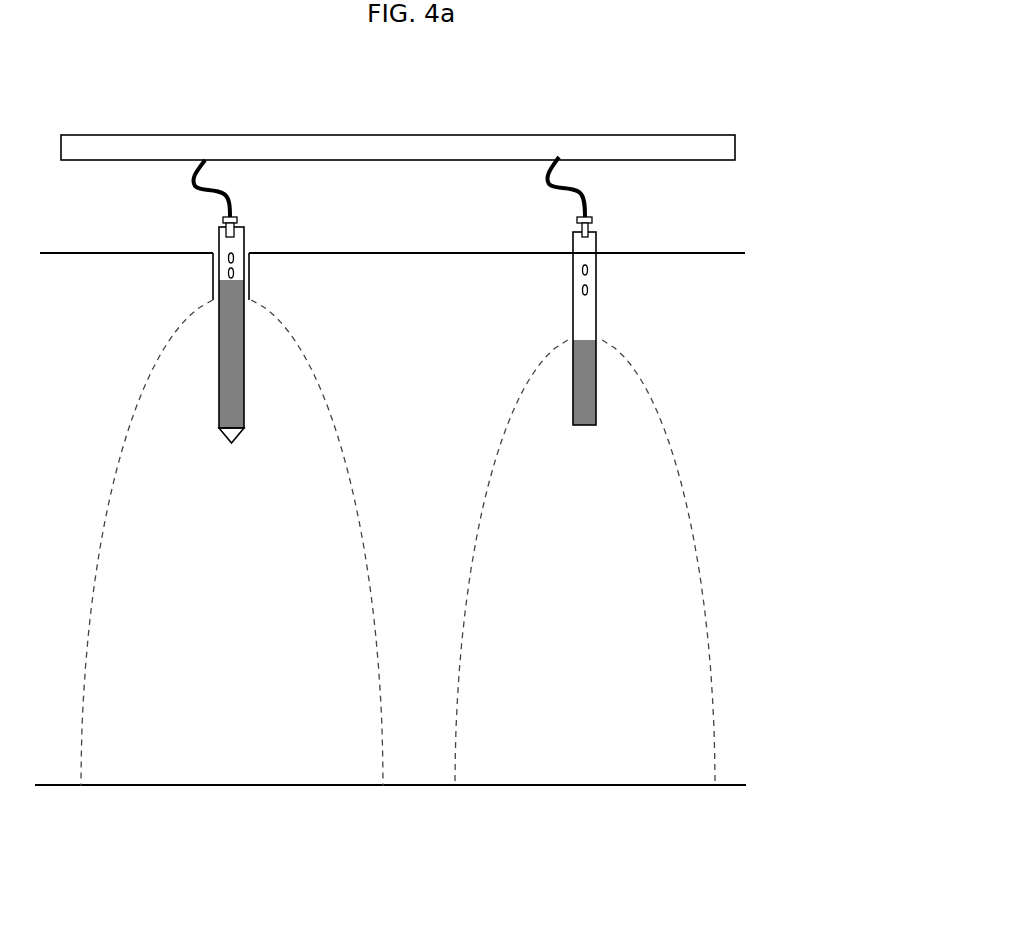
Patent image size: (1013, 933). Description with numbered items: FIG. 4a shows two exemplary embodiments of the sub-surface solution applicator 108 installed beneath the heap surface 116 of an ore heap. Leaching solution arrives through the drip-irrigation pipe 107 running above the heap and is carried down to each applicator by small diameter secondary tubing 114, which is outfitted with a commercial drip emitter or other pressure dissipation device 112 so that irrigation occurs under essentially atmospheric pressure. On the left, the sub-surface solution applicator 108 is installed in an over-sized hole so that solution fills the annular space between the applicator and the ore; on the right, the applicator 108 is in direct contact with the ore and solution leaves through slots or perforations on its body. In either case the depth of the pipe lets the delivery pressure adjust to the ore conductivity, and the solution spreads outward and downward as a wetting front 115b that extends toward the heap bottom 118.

The drip-irrigation pipe 107 is at (571, 133).
The sub-surface solution applicator 108 is at (214, 352).
The pressure dissipation device 112 is at (578, 226).
The small diameter secondary tubing 114 is at (571, 204).
The wetting front 115b is at (545, 365).
The heap surface 116 is at (752, 251).
The heap bottom 118 is at (665, 782).